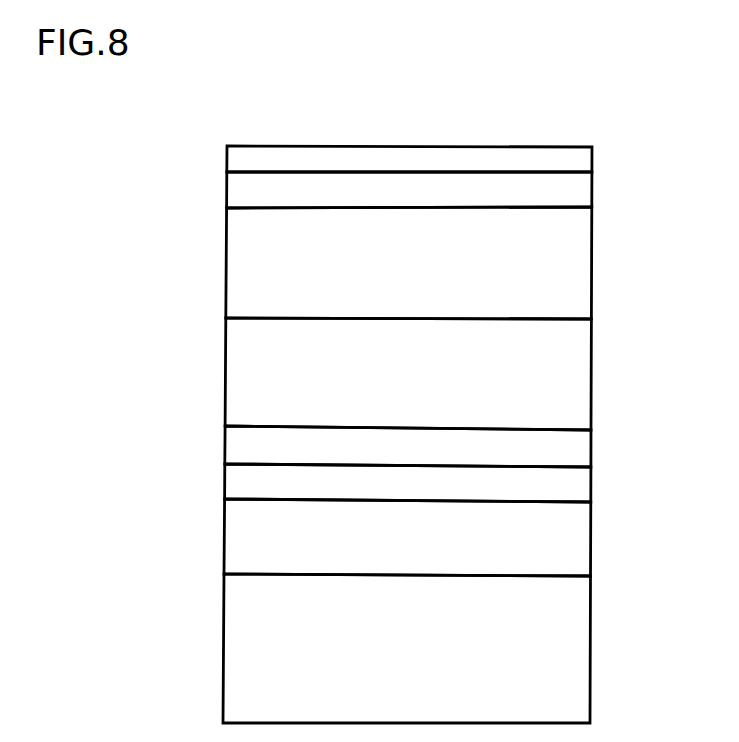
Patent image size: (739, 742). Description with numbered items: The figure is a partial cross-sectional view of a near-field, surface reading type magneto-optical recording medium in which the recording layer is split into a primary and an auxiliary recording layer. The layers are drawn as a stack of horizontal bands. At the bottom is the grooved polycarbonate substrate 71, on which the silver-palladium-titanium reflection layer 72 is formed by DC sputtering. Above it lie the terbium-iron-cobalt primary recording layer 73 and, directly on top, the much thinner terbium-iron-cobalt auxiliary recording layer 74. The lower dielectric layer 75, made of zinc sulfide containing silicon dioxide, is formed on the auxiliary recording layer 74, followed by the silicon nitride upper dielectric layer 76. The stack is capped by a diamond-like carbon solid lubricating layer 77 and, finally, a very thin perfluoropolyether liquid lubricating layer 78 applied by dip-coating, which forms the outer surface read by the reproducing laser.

The polycarbonate substrate 71 is at (592, 631).
The reflection layer 72 is at (592, 557).
The primary recording layer 73 is at (592, 484).
The auxiliary recording layer 74 is at (592, 447).
The lower dielectric layer 75 is at (592, 373).
The upper dielectric layer 76 is at (592, 263).
The solid lubricating layer 77 is at (592, 193).
The liquid lubricating layer 78 is at (592, 157).